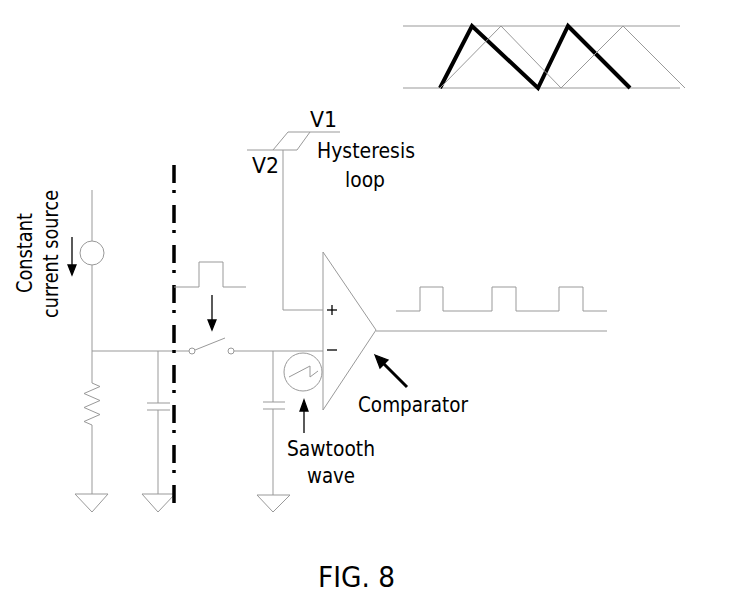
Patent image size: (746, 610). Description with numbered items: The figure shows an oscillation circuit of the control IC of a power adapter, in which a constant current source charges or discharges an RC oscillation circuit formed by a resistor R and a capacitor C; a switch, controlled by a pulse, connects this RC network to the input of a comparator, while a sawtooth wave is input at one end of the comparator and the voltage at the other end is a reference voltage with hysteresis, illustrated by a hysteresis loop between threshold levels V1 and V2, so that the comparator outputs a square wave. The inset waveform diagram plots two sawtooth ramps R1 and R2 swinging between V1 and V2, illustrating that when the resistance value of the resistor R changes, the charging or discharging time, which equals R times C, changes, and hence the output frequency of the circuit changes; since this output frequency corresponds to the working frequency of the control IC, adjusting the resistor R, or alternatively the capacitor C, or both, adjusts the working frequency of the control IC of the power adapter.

The resistor R is at (83, 406).
The capacitor C is at (149, 431).
The upper threshold voltage V1 is at (526, 24).
The lower threshold voltage V2 is at (526, 86).
The first sawtooth waveform (slow ramp) R1 is at (564, 57).
The second sawtooth waveform (fast ramp) R2 is at (543, 57).